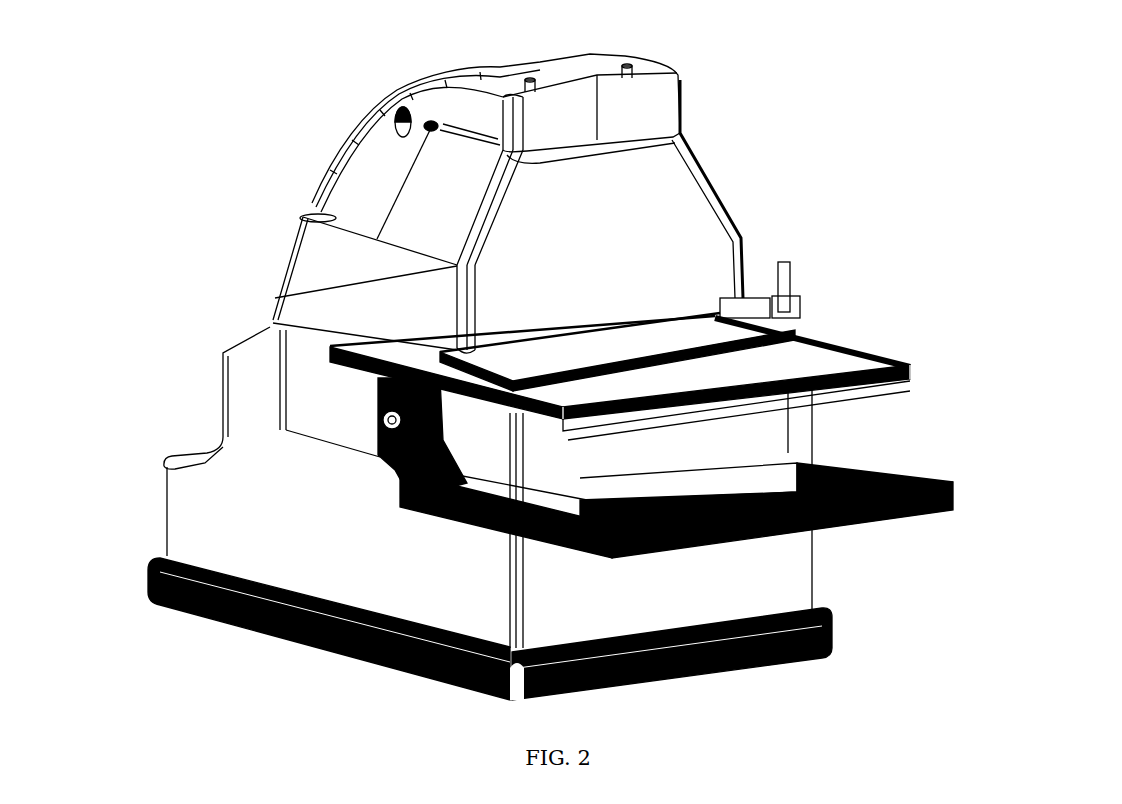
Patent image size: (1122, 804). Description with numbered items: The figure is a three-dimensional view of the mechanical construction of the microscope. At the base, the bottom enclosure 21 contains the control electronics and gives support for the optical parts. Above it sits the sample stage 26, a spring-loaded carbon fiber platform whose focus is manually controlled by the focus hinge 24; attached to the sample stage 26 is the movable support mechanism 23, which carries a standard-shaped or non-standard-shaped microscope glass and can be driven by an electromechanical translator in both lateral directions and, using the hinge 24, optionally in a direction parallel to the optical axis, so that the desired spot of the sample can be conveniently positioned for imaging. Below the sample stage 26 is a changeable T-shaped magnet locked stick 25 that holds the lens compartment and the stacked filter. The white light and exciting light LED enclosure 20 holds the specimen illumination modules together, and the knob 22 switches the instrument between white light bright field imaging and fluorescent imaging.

The white light and exciting light LED enclosure 20 is at (463, 200).
The bottom enclosure 21 is at (283, 513).
The knob 22 is at (790, 278).
The movable support mechanism 23 is at (886, 351).
The focus hinge 24 is at (870, 527).
The T-shaped magnet locked stick 25 is at (740, 424).
The sample stage 26 is at (597, 418).